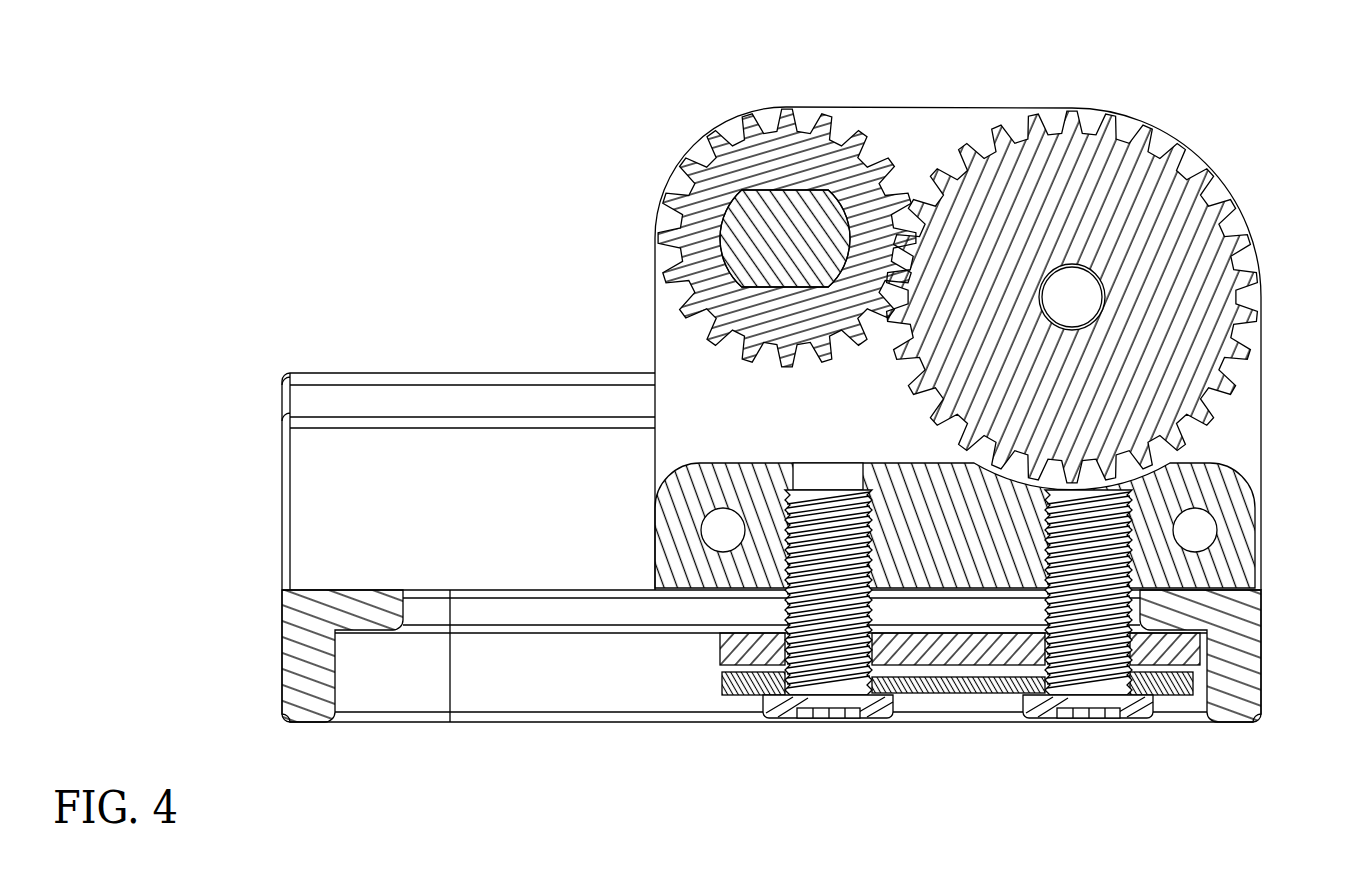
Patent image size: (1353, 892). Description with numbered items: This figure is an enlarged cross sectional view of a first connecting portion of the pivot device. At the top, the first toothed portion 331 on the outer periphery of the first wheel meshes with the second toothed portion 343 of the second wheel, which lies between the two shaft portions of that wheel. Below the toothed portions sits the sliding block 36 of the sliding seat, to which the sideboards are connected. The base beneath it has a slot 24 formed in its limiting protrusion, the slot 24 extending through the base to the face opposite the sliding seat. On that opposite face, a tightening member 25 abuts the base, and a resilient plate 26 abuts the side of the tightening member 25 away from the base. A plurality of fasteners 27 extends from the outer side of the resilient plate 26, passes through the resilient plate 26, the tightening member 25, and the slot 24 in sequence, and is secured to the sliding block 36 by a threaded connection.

The slot 24 is at (626, 612).
The tightening member 25 is at (740, 660).
The resilient plate 26 is at (1173, 680).
The fasteners 27 is at (808, 690).
The sliding block 36 is at (1232, 548).
The first toothed portion 331 is at (826, 125).
The second toothed portion 343 is at (1048, 112).